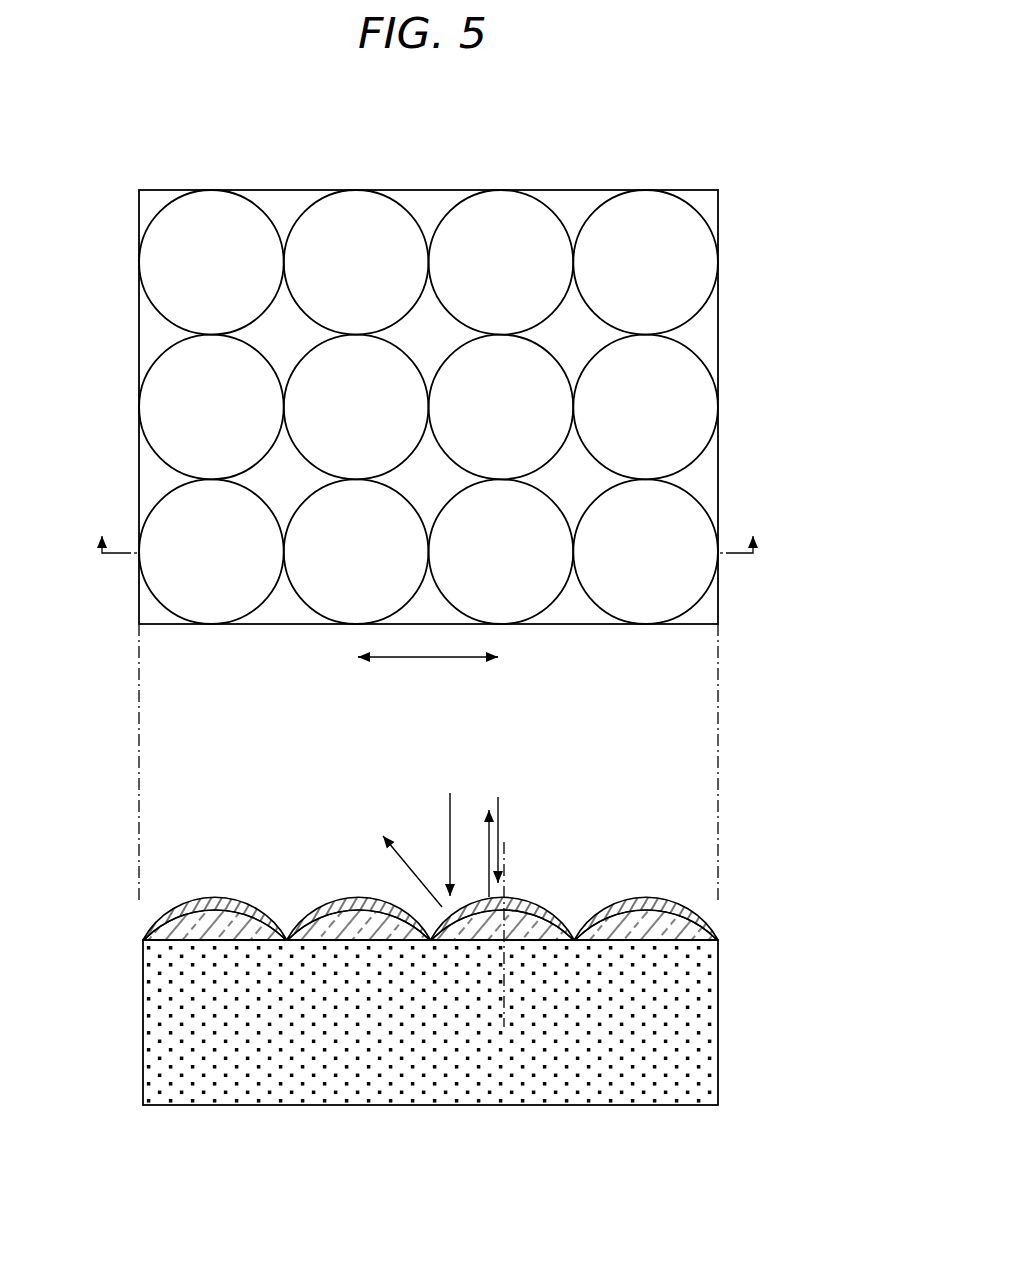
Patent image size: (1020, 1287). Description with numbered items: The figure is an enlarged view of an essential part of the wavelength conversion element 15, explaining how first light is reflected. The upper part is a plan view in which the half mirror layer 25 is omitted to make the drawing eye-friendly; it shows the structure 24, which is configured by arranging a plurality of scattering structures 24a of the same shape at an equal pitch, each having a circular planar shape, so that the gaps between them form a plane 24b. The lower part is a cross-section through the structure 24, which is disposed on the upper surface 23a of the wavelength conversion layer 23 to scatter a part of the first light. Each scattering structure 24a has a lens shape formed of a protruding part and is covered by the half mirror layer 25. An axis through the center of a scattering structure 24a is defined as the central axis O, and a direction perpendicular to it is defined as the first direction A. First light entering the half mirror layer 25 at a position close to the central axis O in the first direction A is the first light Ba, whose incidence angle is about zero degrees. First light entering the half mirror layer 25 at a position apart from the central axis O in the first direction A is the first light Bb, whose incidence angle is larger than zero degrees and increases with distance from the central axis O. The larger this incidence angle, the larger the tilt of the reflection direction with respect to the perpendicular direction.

The wavelength conversion element 15 is at (692, 166).
The structure 24 is at (407, 200).
The scattering structures 24a is at (497, 206).
The plane 24b is at (577, 328).
The half mirror layer 25 is at (628, 900).
The wavelength conversion layer 23 is at (710, 982).
The upper surface 23a is at (700, 933).
The first direction A is at (428, 657).
The first light Bb is at (450, 827).
The first light Ba is at (498, 834).
The central axis O is at (505, 856).